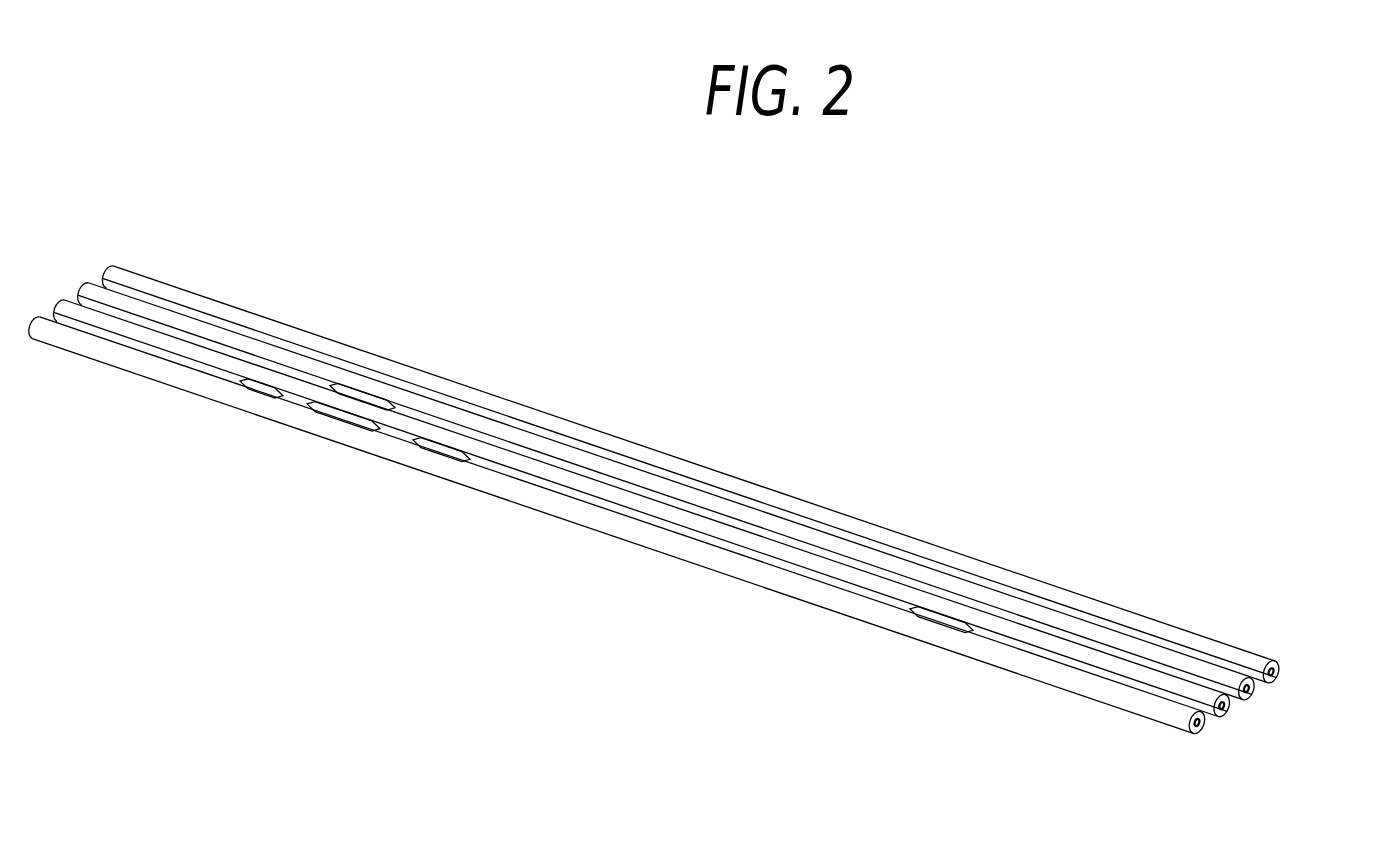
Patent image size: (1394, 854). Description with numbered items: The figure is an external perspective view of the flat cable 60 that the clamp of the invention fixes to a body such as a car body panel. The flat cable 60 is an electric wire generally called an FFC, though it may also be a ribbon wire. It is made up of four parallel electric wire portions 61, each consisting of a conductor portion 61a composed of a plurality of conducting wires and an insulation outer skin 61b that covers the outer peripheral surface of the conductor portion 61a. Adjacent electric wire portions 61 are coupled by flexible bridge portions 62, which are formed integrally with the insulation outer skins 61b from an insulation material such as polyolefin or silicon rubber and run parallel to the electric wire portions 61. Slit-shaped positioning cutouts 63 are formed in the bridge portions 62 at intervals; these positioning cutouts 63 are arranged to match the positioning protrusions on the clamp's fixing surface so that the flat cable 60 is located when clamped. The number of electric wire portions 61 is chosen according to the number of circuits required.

The flat cable 60 is at (708, 505).
The electric wire portion 61 is at (744, 478).
The conductor portion 61a is at (1278, 673).
The insulation outer skin 61b is at (1277, 663).
The bridge portion 62 is at (1258, 687).
The positioning cutout 63 is at (273, 388).